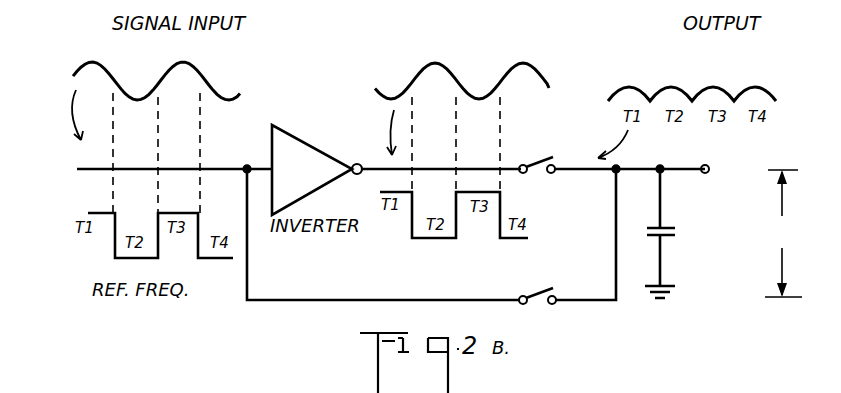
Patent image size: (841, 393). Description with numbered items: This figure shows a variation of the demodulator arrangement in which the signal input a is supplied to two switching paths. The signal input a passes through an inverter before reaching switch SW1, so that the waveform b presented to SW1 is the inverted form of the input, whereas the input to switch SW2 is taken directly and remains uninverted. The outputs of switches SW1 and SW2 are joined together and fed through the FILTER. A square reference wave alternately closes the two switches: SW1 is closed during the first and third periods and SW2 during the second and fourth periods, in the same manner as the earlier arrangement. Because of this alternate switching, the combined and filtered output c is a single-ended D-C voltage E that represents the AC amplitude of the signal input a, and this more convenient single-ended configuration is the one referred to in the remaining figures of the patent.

The signal input a is at (232, 74).
The inverted waveform b is at (476, 76).
The output waveform c is at (724, 75).
The switch SW1 is at (537, 149).
The switch SW2 is at (537, 283).
The filter FILTER is at (693, 233).
The output voltage E is at (783, 233).